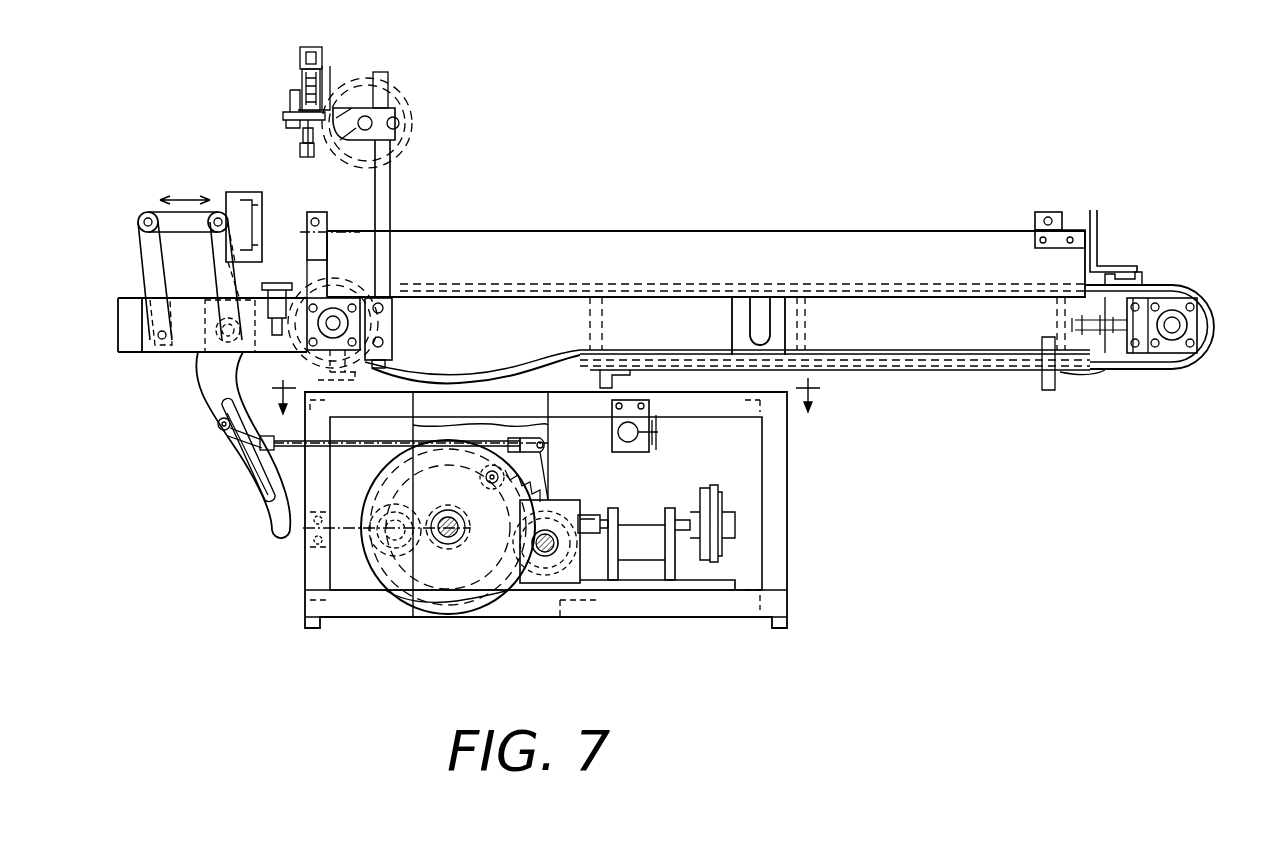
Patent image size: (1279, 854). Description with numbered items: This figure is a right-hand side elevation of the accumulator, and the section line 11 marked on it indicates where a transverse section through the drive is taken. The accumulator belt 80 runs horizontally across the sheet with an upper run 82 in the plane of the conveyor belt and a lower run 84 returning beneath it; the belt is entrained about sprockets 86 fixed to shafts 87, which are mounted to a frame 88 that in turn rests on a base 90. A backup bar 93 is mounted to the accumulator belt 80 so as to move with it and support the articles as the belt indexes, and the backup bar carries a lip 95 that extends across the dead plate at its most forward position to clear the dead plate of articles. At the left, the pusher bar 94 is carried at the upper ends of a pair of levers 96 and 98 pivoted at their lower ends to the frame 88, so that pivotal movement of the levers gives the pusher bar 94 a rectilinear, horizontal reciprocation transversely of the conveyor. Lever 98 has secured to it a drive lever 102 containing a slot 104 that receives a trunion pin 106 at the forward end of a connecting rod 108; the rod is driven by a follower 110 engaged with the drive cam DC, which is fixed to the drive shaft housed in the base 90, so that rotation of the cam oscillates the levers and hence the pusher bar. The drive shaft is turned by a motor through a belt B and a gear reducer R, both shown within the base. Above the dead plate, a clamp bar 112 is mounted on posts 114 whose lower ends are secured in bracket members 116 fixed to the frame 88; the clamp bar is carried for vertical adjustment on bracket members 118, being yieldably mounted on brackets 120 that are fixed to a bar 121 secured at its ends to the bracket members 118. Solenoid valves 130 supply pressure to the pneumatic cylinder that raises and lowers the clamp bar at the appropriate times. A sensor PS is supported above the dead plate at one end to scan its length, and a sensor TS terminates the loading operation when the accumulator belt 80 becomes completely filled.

The accumulator belt 80 is at (838, 256).
The upper run 82 is at (688, 283).
The lower run 84 is at (1126, 370).
The sprockets 86 is at (1205, 325).
The sprocket shafts 87 is at (1174, 322).
The frame 88 is at (930, 342).
The base 90 is at (783, 470).
The backup bar 93 is at (1138, 270).
The pusher bar 94 is at (244, 192).
The lip 95 is at (1098, 236).
The lever 96 is at (143, 263).
The lever 98 is at (212, 268).
The drive lever 102 is at (195, 375).
The slot 104 is at (245, 470).
The trunion pin 106 is at (218, 430).
The connecting rod 108 is at (365, 447).
The follower 110 is at (520, 468).
The clamp bar 112 is at (300, 152).
The posts 114 is at (385, 176).
The bracket members 116 is at (377, 255).
The bracket members 118 is at (395, 108).
The brackets 120 is at (323, 68).
The bar 121 is at (330, 84).
The solenoid valves 130 is at (630, 442).
The sensor PS is at (313, 183).
The sensor TS is at (1040, 215).
The drive cam DC is at (378, 580).
The gear reducer R is at (556, 500).
The belt B is at (712, 488).
The section line 11- 11 is at (550, 396).